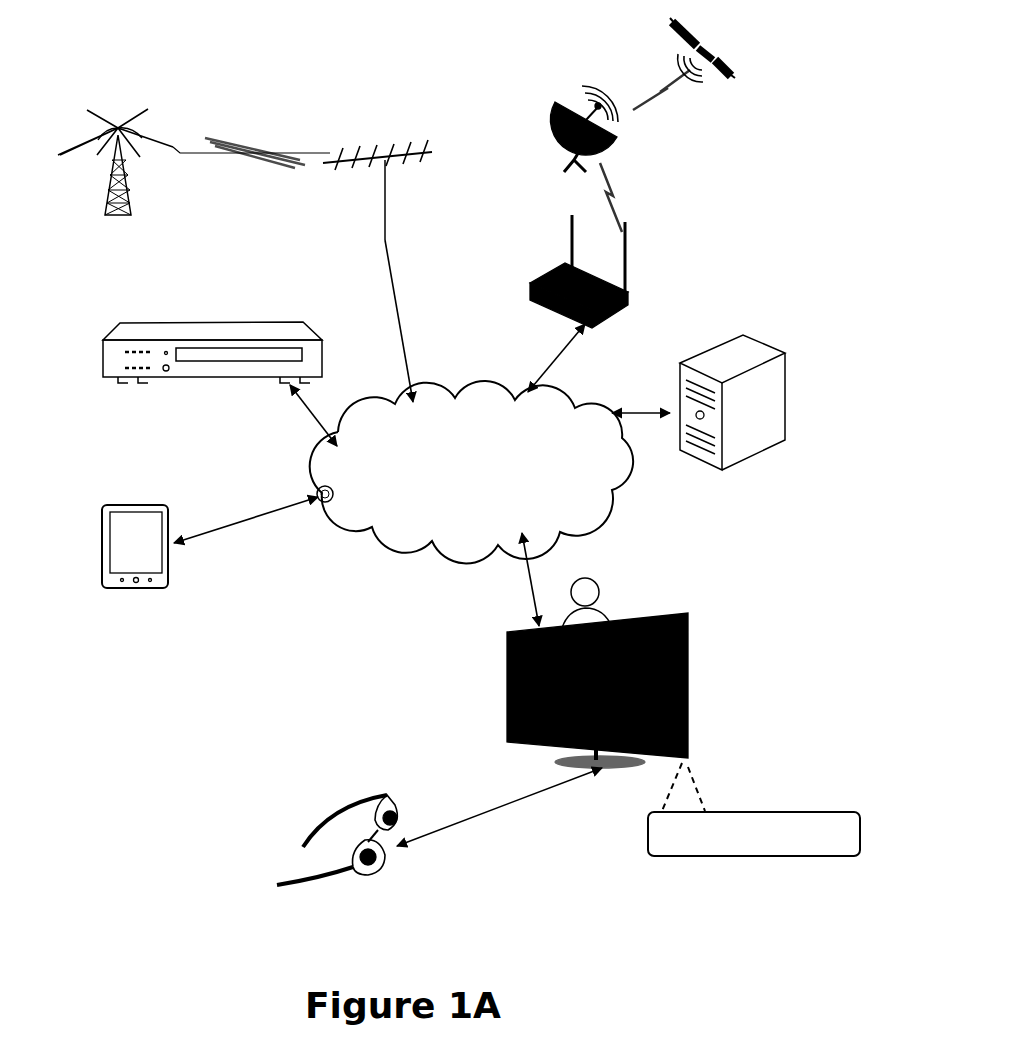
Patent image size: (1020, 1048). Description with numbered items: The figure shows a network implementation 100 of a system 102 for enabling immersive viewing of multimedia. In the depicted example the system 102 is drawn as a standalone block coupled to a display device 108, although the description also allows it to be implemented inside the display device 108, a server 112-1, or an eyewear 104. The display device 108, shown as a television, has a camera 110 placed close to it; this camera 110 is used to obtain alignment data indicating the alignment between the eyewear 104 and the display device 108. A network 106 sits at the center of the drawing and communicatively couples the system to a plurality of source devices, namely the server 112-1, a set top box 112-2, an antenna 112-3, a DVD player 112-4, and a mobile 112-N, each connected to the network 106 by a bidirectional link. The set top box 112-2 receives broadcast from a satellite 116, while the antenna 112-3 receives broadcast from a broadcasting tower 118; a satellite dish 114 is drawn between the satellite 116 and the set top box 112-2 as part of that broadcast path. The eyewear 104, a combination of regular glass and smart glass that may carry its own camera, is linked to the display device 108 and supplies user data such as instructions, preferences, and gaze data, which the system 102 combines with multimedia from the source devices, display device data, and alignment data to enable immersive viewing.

The network implementation 100 is at (316, 50).
The system 102 is at (754, 809).
The eyewear 104 is at (356, 790).
The network 106 is at (471, 472).
The display device 108 is at (672, 605).
The camera 110 is at (593, 570).
The server 112-1 is at (739, 328).
The set top box 112-2 is at (632, 292).
The antenna 112-3 is at (349, 138).
The DVD player 112-4 is at (179, 316).
The mobile 112-N is at (143, 499).
The satellite dish 114 is at (559, 99).
The satellite 116 is at (733, 62).
The broadcasting tower 118 is at (101, 106).